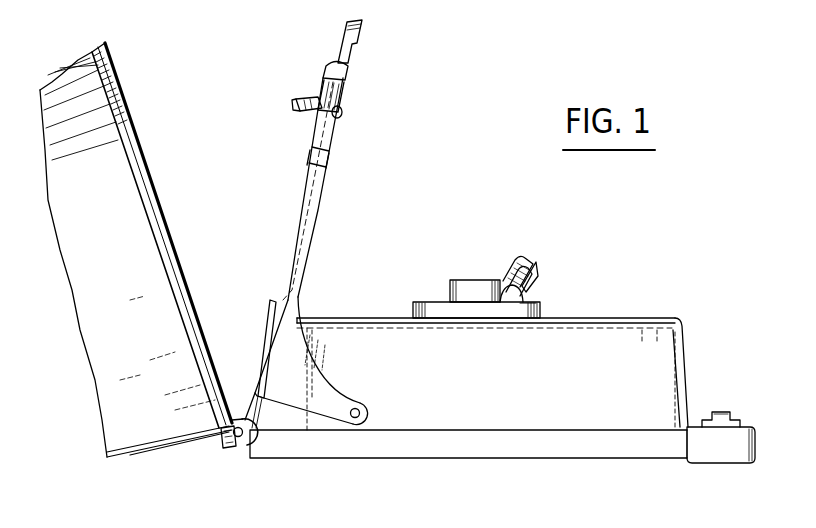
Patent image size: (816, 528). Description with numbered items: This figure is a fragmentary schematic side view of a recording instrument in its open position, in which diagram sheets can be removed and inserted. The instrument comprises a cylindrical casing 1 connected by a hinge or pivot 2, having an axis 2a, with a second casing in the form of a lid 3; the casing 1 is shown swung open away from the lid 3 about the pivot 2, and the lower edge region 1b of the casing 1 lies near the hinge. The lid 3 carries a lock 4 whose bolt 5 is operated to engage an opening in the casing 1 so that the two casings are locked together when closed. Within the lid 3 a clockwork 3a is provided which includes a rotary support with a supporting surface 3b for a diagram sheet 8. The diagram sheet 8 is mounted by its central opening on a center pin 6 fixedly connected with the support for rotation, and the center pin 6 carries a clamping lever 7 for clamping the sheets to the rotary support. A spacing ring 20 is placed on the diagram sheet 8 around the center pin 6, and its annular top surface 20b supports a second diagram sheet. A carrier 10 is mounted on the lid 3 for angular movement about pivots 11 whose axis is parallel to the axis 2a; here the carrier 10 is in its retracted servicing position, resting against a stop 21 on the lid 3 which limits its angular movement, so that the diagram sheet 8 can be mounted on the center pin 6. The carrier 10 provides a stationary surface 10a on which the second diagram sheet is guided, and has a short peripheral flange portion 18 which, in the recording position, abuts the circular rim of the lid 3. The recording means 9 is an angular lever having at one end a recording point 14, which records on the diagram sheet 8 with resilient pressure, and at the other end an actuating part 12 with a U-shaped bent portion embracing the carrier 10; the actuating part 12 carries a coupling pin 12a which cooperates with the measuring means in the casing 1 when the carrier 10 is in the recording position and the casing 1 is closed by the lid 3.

The cylindrical casing 1 is at (115, 420).
The board lower edge 1b is at (141, 447).
The hinge or pivot 2 is at (237, 445).
The axis 2a is at (232, 440).
The lid 3 is at (686, 338).
The clockwork 3a is at (682, 386).
The supporting surface 3b is at (604, 326).
The lock 4 is at (734, 462).
The bolt 5 is at (728, 412).
The center pin 6 is at (455, 288).
The clamping lever 7 is at (528, 266).
The diagram sheet 8 is at (630, 318).
The recording means 9 is at (350, 80).
The carrier 10 is at (314, 150).
The stationary surface 10a is at (290, 262).
The pivots 11 is at (362, 413).
The actuating part 12 is at (326, 78).
The coupling pin 12a is at (295, 106).
The recording point 14 is at (342, 112).
The peripheral flange portion 18 is at (360, 36).
The spacing ring 20 is at (410, 303).
The annular surface 20b is at (534, 302).
The stop 21 is at (270, 304).